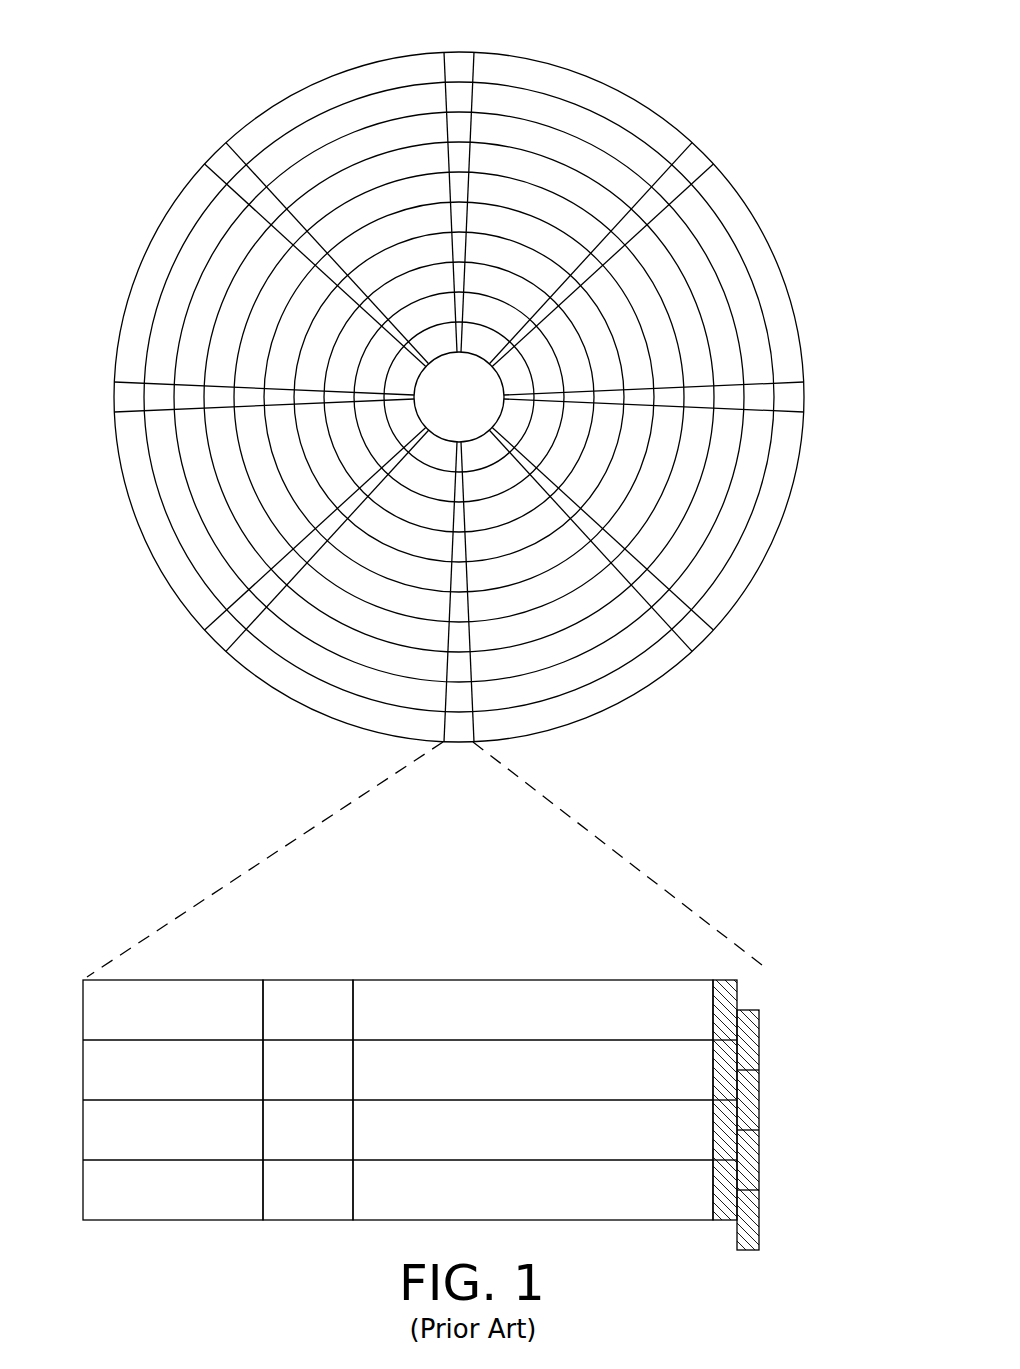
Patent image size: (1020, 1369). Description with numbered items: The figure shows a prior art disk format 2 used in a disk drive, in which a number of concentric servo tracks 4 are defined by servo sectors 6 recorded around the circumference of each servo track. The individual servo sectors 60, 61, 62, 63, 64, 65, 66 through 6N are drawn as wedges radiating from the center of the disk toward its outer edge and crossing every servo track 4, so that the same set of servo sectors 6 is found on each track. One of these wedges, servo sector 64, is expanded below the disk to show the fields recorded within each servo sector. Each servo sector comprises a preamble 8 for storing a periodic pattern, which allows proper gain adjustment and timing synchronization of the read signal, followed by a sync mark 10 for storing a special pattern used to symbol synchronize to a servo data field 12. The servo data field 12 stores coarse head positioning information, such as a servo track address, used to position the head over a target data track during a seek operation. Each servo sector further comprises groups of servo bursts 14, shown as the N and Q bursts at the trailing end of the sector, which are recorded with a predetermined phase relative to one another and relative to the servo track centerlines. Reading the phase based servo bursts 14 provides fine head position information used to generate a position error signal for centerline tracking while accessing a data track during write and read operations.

The disk format 2 is at (200, 52).
The servo tracks 4 is at (578, 120).
The servo sectors 6 is at (460, 410).
The servo sector 60 is at (460, 60).
The servo sector 61 is at (693, 160).
The servo sector 62 is at (800, 398).
The servo sector 63 is at (693, 632).
The servo sector 64 is at (302, 814).
The servo sector 65 is at (220, 635).
The servo sector 66 is at (120, 395).
The servo sector 6N is at (220, 158).
The preamble 8 is at (182, 978).
The sync mark 10 is at (312, 978).
The servo data field 12 is at (521, 978).
The servo bursts 14 is at (760, 972).